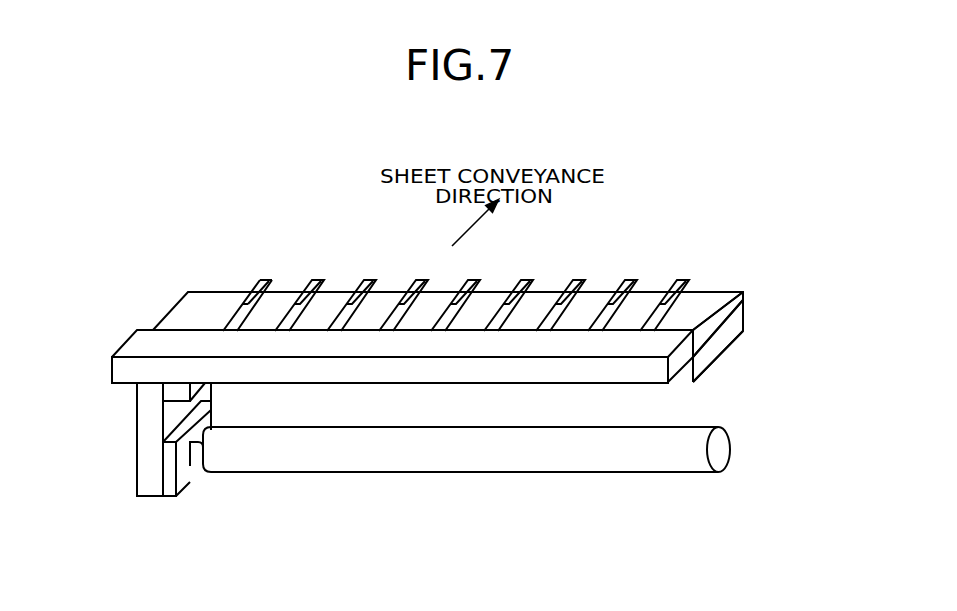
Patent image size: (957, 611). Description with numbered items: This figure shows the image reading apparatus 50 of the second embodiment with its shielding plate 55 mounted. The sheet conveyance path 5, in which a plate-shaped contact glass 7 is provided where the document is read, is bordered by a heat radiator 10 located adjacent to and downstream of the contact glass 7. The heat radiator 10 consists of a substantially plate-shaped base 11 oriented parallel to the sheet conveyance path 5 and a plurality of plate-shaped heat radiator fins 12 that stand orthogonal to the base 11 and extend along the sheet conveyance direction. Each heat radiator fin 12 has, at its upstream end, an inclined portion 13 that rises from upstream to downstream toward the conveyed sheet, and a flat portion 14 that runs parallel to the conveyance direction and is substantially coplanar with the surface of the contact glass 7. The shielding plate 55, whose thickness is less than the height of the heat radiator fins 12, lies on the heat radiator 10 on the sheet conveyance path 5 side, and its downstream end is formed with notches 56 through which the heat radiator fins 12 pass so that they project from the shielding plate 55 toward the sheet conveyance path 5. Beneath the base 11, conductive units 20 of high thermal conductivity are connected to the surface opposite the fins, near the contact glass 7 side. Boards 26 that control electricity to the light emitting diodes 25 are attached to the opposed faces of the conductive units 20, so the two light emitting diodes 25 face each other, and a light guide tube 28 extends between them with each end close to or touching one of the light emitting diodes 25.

The image reading apparatus 50 is at (229, 173).
The sheet conveyance path 5 is at (135, 345).
The contact glass 7 is at (110, 368).
The heat radiator 10 is at (722, 357).
The base 11 is at (733, 342).
The heat radiator fin 12 is at (677, 283).
The inclined portion 13 is at (232, 313).
The flat portion 14 is at (248, 300).
The shielding plate 55 is at (723, 291).
The notches 56 is at (693, 291).
The conductive units 20 is at (150, 498).
The boards 26 is at (172, 498).
The light emitting diodes 25 is at (190, 468).
The light guide tube 28 is at (440, 473).